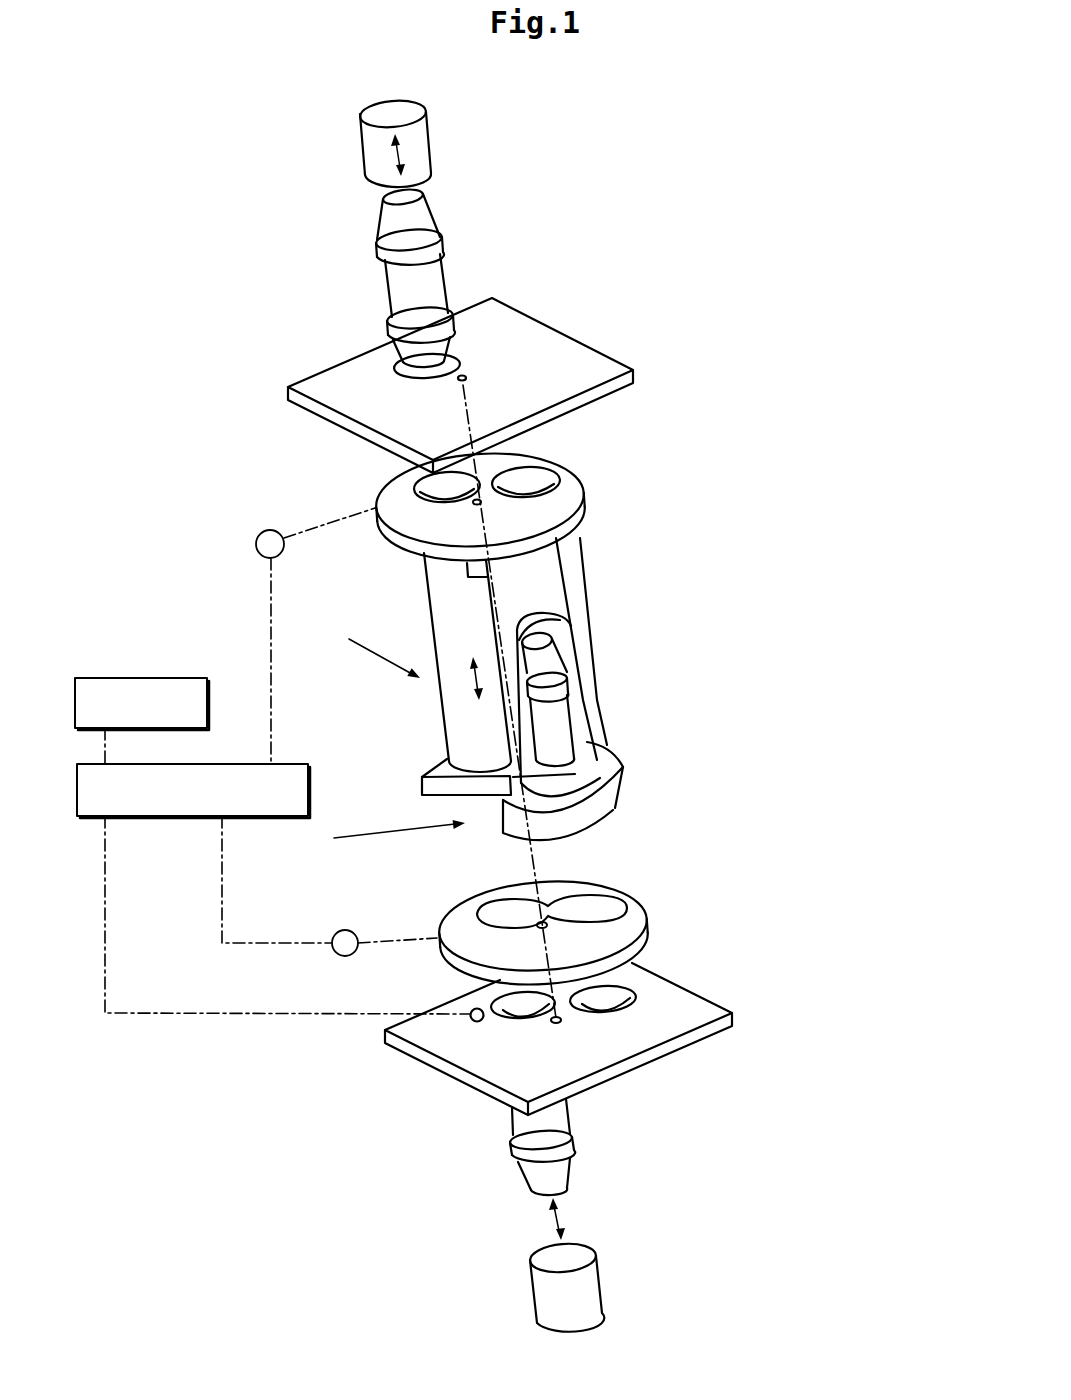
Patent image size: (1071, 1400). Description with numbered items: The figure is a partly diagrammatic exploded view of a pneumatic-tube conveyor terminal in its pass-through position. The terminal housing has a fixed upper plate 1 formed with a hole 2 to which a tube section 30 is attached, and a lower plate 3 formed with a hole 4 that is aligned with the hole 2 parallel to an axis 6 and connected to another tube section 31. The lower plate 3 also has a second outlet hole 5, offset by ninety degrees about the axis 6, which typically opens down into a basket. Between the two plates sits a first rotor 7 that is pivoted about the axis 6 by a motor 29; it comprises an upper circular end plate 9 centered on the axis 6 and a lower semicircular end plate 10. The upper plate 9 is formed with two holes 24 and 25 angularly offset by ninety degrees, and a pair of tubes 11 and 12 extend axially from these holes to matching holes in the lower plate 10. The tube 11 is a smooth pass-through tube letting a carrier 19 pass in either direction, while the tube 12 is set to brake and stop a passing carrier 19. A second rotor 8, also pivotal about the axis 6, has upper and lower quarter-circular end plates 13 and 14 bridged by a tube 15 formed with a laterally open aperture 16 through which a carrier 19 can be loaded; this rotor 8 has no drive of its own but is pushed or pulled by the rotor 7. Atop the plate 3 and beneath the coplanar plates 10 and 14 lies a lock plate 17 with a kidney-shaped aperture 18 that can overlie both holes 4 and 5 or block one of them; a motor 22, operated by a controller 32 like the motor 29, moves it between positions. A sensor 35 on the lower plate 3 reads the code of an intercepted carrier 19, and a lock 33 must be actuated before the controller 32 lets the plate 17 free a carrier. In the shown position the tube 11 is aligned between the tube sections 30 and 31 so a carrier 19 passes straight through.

The upper plate 1 is at (505, 365).
The hole 2 is at (460, 355).
The lower plate 3 is at (570, 1050).
The hole 4 is at (552, 993).
The second outlet hole 5 is at (600, 1009).
The axis 6 is at (533, 860).
The first rotor 7 is at (401, 659).
The second rotor 8 is at (379, 839).
The upper circular end plate 9 is at (535, 508).
The lower semicircular end plate 10 is at (432, 762).
The pass-through tube 11 is at (450, 623).
The braking tube 12 is at (567, 590).
The upper quarter-circular end plate 13 is at (580, 537).
The lower quarter-circular end plate 14 is at (600, 800).
The tube 15 is at (568, 793).
The aperture 16 is at (550, 622).
The lock plate 17 is at (582, 952).
The kidney-shaped aperture 18 is at (567, 908).
The carrier 19 is at (418, 222).
The motor 22 is at (333, 933).
The hole 24 is at (433, 493).
The hole 25 is at (535, 468).
The motor 29 is at (258, 537).
The tube section 30 is at (373, 150).
The tube section 31 is at (558, 1297).
The controller 32 is at (204, 814).
The lock 33 is at (125, 678).
The sensor 35 is at (470, 1022).